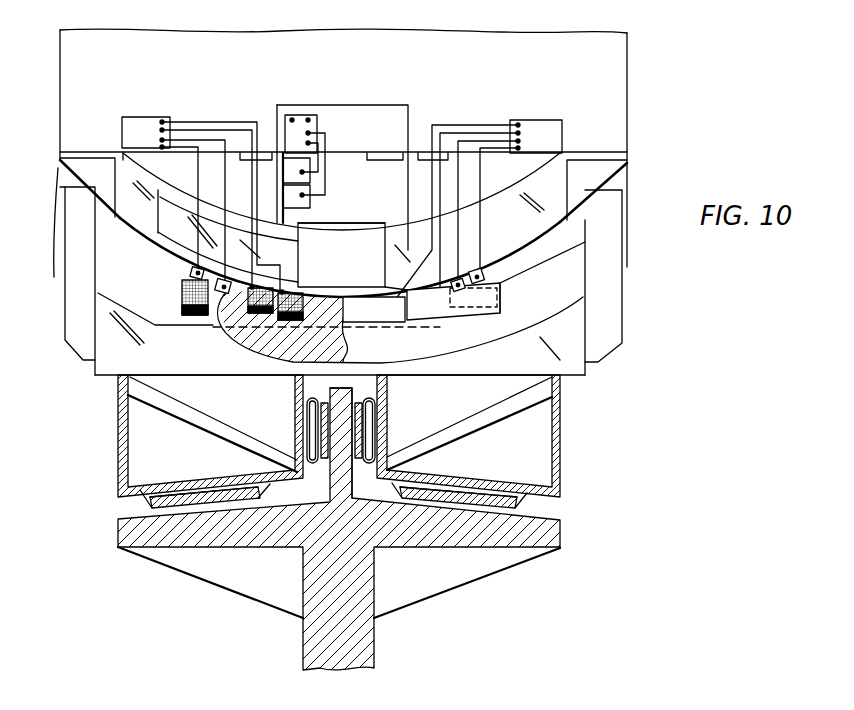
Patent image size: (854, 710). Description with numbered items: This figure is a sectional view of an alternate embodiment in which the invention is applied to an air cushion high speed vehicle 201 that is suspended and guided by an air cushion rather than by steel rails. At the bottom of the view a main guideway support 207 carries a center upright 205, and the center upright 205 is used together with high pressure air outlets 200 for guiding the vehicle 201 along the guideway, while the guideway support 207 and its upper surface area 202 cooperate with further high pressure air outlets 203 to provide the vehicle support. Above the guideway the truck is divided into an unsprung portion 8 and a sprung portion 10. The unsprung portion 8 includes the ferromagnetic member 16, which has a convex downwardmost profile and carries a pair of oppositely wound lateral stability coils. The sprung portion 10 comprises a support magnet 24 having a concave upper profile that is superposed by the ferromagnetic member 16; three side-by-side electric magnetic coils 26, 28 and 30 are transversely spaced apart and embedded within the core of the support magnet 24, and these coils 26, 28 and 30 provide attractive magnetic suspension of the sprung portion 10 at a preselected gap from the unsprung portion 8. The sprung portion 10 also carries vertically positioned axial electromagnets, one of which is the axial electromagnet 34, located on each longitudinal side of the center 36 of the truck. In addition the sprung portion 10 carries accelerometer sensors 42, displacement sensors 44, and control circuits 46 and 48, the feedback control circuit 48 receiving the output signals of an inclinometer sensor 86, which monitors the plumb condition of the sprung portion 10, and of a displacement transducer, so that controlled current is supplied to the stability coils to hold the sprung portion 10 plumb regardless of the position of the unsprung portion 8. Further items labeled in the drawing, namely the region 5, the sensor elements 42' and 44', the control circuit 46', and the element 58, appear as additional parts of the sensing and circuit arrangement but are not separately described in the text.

The center of the truck 36 is at (375, 33).
The air cushion high speed vehicle 201 is at (630, 119).
The control circuit 46 is at (195, 190).
The electronic circuit module 46' is at (482, 196).
The feedback control circuit 48 is at (294, 117).
The inclinometer sensor 86 is at (310, 188).
The unsprung portion 8 is at (522, 181).
The axial electromagnet 34 is at (330, 228).
The ferromagnetic member 16 is at (280, 256).
The hatched mounting body 5 is at (280, 326).
The electric magnetic coil 30 is at (422, 322).
The detector mount 44' is at (476, 301).
The detector 42' is at (491, 280).
The sensor element 58 is at (500, 296).
The accelerometer sensor 42 is at (174, 269).
The displacement sensor 44 is at (195, 323).
The electric magnetic coil 26 is at (182, 300).
The electric magnetic coil 28 is at (290, 320).
The sprung portion 10 is at (448, 320).
The support magnet 24 is at (252, 313).
The high pressure air outlets 203 is at (207, 508).
The main guideway support 207 is at (310, 627).
The center upright 205 is at (343, 473).
The upper surface area 202 is at (243, 505).
The high pressure air outlets 200 is at (362, 423).